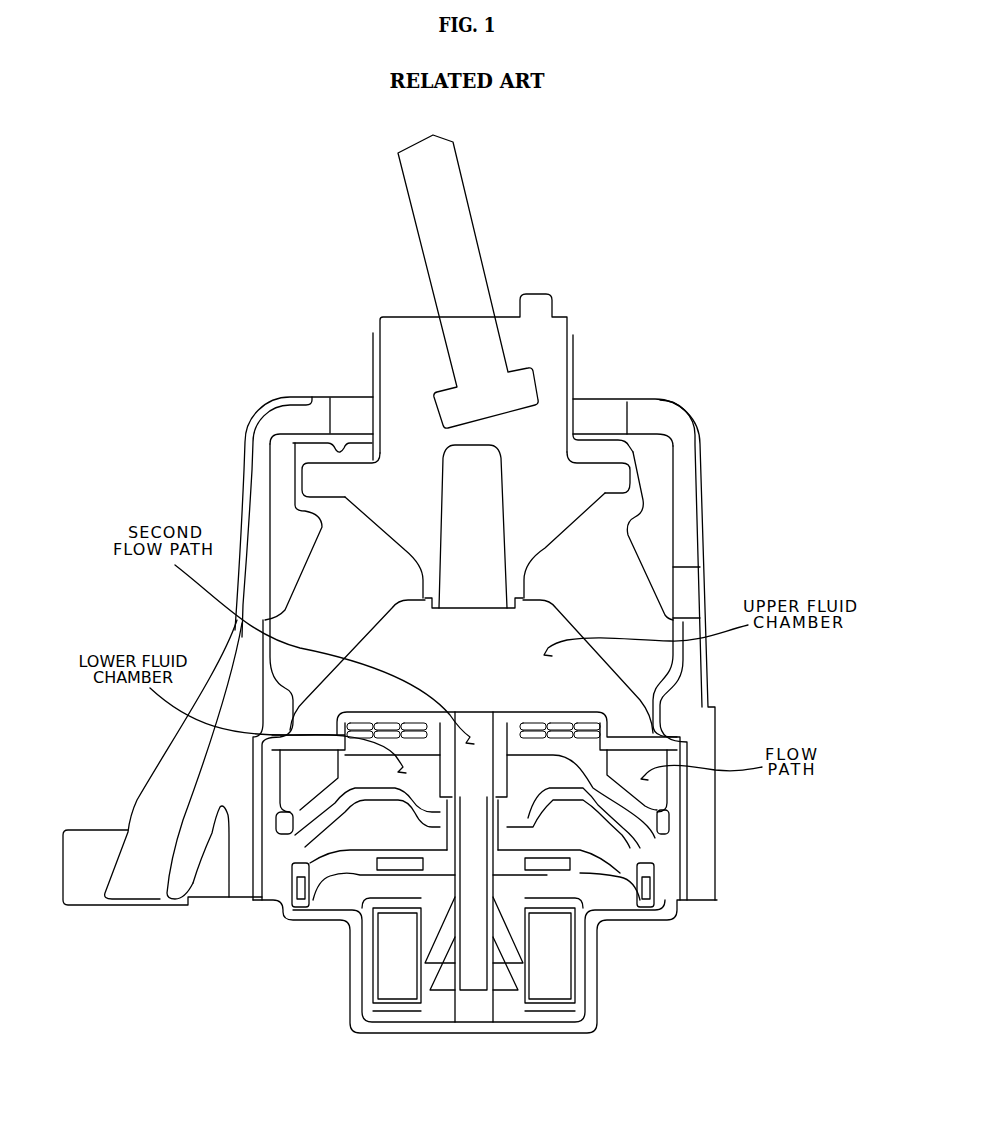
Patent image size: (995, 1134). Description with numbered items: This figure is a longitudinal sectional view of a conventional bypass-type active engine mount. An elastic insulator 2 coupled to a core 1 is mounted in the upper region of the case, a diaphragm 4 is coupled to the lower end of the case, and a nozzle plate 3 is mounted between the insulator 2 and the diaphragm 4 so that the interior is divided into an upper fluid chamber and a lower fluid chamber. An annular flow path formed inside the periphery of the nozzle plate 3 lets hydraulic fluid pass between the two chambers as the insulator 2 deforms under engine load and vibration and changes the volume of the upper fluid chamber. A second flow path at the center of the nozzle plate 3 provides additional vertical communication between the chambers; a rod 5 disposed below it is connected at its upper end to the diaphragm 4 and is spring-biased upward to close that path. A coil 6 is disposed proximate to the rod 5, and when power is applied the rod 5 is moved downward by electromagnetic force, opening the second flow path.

The core 1 is at (540, 437).
The insulator 2 is at (620, 563).
The nozzle plate 3 is at (580, 745).
The diaphragm 4 is at (573, 805).
The rod 5 is at (470, 873).
The coil 6 is at (393, 960).